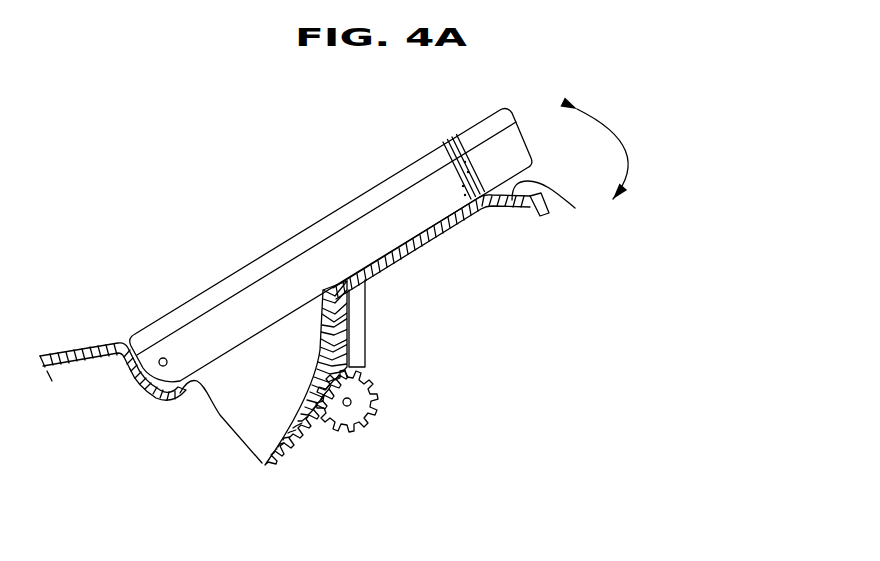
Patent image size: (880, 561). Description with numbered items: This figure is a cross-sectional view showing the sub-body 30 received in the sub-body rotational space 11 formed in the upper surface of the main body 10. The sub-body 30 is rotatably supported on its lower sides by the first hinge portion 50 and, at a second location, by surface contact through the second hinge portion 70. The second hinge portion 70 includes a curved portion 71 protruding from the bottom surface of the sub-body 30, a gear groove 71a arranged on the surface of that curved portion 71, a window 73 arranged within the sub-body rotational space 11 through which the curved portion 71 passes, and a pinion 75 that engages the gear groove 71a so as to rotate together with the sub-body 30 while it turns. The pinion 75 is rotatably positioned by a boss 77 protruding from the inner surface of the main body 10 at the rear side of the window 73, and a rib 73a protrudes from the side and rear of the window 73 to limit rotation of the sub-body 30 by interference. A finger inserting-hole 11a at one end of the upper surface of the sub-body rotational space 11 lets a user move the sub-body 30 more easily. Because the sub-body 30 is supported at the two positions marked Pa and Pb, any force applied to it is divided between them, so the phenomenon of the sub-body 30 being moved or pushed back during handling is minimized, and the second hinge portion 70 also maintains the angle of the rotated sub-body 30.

The sub-body 30 is at (313, 231).
The first hinge portion 50 is at (174, 355).
The first support position Pa is at (135, 371).
The sub-body rotational space 11 is at (130, 375).
The window 73 is at (188, 392).
The curved portion 71 is at (235, 400).
The gear groove 71a is at (290, 450).
The second support position Pb is at (347, 407).
The rib 73a is at (345, 313).
The boss 77 is at (357, 343).
The main body 10 is at (460, 219).
The finger inserting-hole 11a is at (575, 208).
The pinion 75 is at (366, 384).
The second hinge portion 70 is at (384, 408).